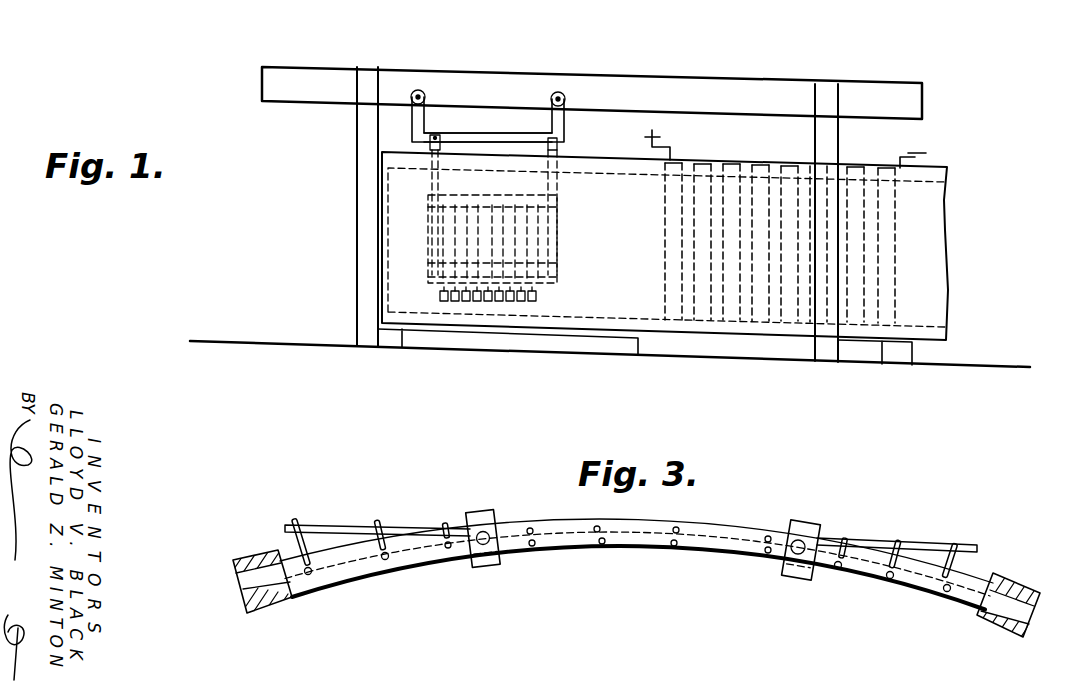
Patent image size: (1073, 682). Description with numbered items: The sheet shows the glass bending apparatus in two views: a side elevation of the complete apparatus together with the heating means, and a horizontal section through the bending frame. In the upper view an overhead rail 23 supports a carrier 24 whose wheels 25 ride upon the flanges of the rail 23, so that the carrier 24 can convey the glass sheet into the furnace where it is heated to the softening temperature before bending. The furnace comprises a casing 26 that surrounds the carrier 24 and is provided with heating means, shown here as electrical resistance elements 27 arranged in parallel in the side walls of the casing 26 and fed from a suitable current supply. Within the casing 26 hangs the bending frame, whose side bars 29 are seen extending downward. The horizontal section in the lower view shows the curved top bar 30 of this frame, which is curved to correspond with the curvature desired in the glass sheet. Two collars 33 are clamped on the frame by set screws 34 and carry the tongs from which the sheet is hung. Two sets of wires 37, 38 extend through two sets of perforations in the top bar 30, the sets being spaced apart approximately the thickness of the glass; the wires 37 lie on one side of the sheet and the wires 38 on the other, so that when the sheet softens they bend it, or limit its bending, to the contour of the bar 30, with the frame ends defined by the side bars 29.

In FIG. 1, the overhead rail 23 is at (887, 103).
In FIG. 1, the carrier 24 is at (480, 137).
In FIG. 1, the wheels 25 is at (418, 91).
In FIG. 1, the casing 26 is at (614, 278).
In FIG. 1, the electrical resistance elements 27 is at (693, 320).
In FIG. 1, the side bars 29 is at (432, 183).
In FIG. 3, the side bars 29 is at (274, 598).
In FIG. 3, the curved top bar 30 is at (638, 548).
In FIG. 3, the collars 33 is at (487, 559).
In FIG. 3, the set screws 34 is at (490, 533).
In FIG. 1, the wires 37 is at (468, 243).
In FIG. 3, the wires 37 is at (385, 559).
In FIG. 3, the wires 38 is at (378, 525).